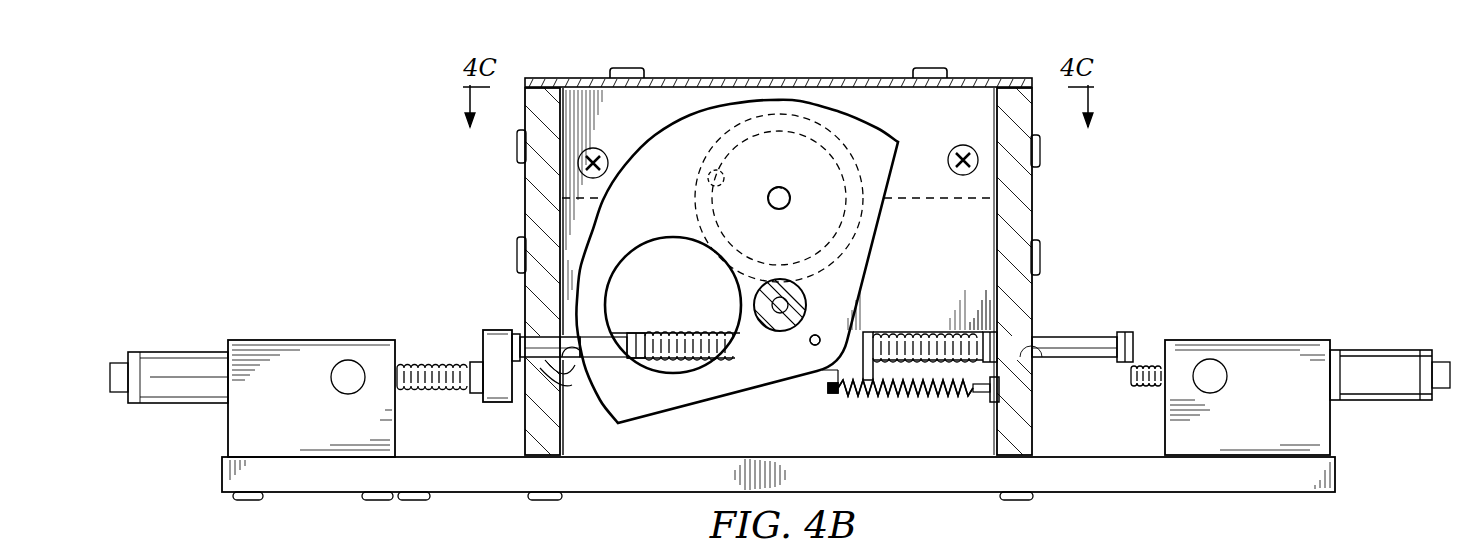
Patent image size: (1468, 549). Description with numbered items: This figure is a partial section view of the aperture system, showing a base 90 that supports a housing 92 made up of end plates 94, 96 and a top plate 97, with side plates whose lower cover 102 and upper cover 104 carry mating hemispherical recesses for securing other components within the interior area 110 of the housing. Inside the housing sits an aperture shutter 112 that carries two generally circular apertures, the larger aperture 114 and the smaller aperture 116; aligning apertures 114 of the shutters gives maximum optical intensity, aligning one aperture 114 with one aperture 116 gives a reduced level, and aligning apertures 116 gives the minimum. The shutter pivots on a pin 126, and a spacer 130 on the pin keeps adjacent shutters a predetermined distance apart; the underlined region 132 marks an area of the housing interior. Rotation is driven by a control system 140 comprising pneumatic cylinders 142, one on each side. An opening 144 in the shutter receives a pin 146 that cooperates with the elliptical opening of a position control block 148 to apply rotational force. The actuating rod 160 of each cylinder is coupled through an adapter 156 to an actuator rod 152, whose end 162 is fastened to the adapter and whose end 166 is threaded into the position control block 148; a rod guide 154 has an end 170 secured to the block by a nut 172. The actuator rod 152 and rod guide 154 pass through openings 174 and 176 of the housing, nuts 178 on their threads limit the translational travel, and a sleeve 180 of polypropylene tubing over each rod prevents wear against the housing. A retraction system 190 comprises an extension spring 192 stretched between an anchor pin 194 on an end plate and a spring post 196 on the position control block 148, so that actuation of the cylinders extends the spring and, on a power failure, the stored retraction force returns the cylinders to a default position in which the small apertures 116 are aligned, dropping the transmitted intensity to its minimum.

The base 90 is at (1338, 470).
The housing 92 is at (515, 180).
The end plate 94 is at (525, 205).
The end plate 96 is at (1032, 215).
The top plate 97 is at (781, 78).
The lower cover 102 is at (907, 198).
The upper cover 104 is at (935, 208).
The interior area 110 is at (690, 450).
The aperture shutter 112 is at (878, 130).
The aperture 114 is at (708, 172).
The aperture 116 is at (779, 187).
The pin 126 is at (780, 280).
The spacer 130 is at (760, 325).
The housing interior 132 is at (985, 228).
The control system 140 is at (219, 324).
The pneumatic cylinder 142 is at (180, 405).
The opening 144 is at (818, 345).
The pin 146 is at (818, 336).
The position control block 148 is at (820, 372).
The actuator rod 152 is at (566, 383).
The rod guide 154 is at (1122, 332).
The adapter 156 is at (483, 345).
The actuating rod 160 is at (430, 388).
The end 162 is at (487, 395).
The end 166 is at (700, 335).
The end 170 is at (915, 396).
The nut 172 is at (868, 332).
The opening 174 is at (520, 338).
The opening 176 is at (1035, 350).
The nut 178 is at (636, 335).
The sleeve 180 is at (592, 358).
The retraction system 190 is at (942, 447).
The extension spring 192 is at (880, 397).
The anchor pin 194 is at (985, 403).
The spring post 196 is at (835, 394).